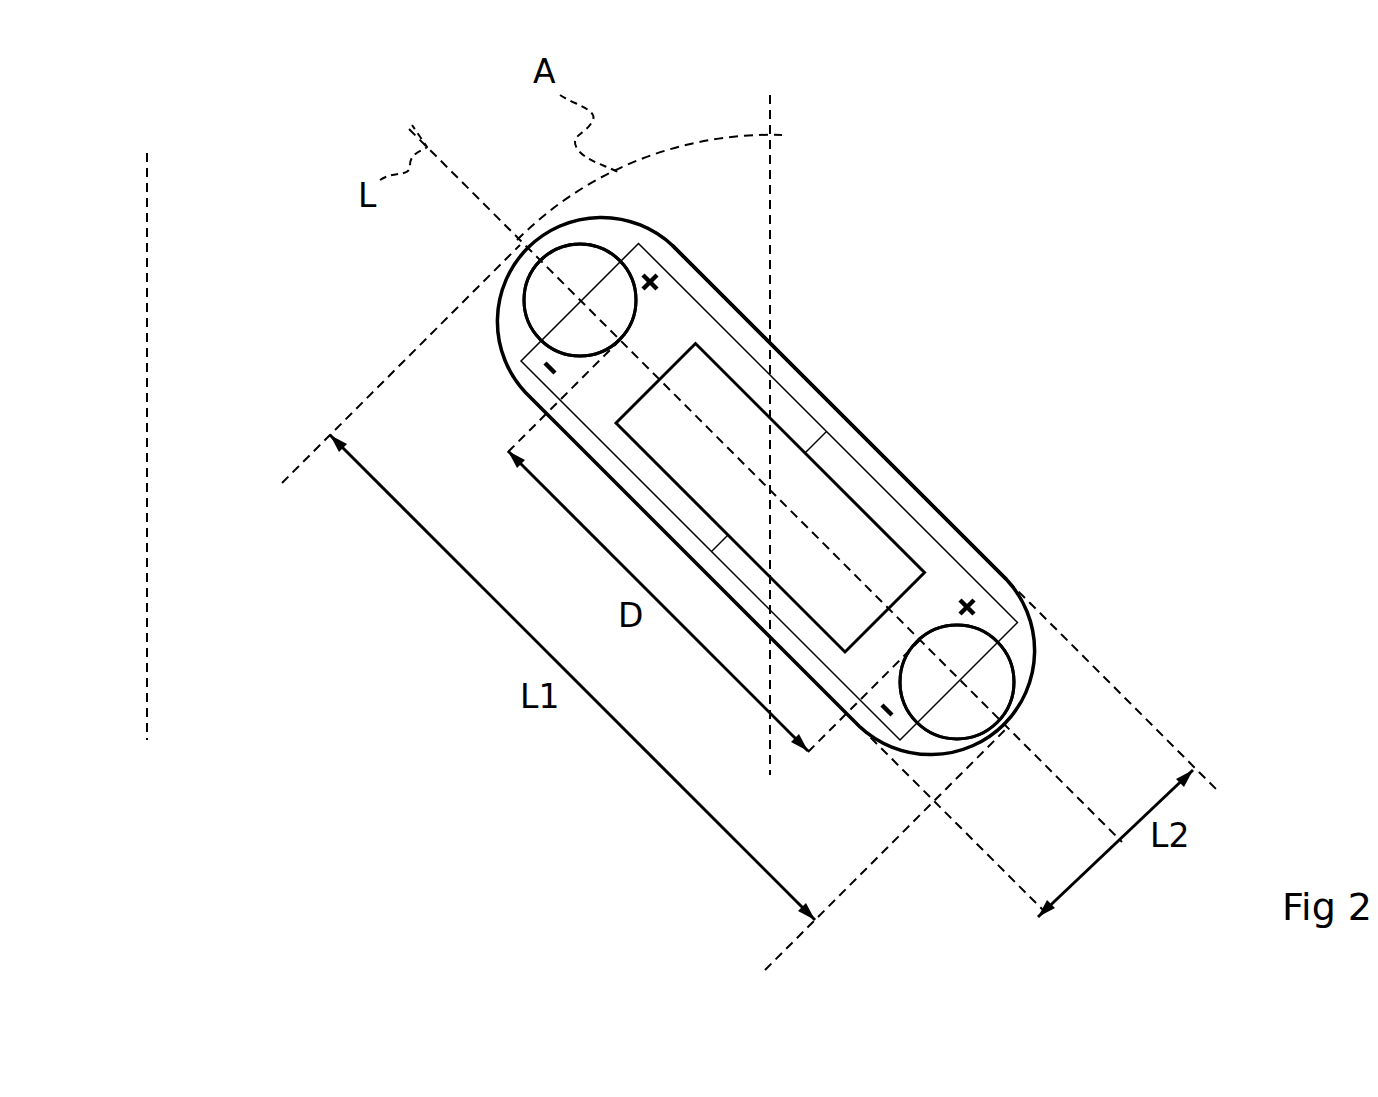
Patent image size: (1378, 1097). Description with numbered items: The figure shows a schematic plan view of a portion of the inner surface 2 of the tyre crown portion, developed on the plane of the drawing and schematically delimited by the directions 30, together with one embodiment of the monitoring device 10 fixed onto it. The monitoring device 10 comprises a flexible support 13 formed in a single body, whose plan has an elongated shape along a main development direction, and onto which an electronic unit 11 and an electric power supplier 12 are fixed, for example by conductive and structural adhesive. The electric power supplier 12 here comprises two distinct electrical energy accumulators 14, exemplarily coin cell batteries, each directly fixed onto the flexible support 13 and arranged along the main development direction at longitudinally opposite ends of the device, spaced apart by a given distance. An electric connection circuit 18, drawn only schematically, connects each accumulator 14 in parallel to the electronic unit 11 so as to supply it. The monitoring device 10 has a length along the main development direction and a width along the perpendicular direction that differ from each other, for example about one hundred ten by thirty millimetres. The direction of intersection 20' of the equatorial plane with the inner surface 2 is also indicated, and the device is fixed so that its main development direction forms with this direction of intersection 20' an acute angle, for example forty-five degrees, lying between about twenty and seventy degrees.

The inner surface 2 is at (1140, 443).
The monitoring device 10 is at (1050, 213).
The electronic unit 11 is at (818, 569).
The electric power supplier 12 is at (522, 282).
The flexible support 13 is at (503, 352).
The electrical energy accumulator 14 is at (586, 339).
The electric connection circuit 18 is at (845, 432).
The direction of intersection 20' is at (836, 195).
The directions 30 is at (147, 240).